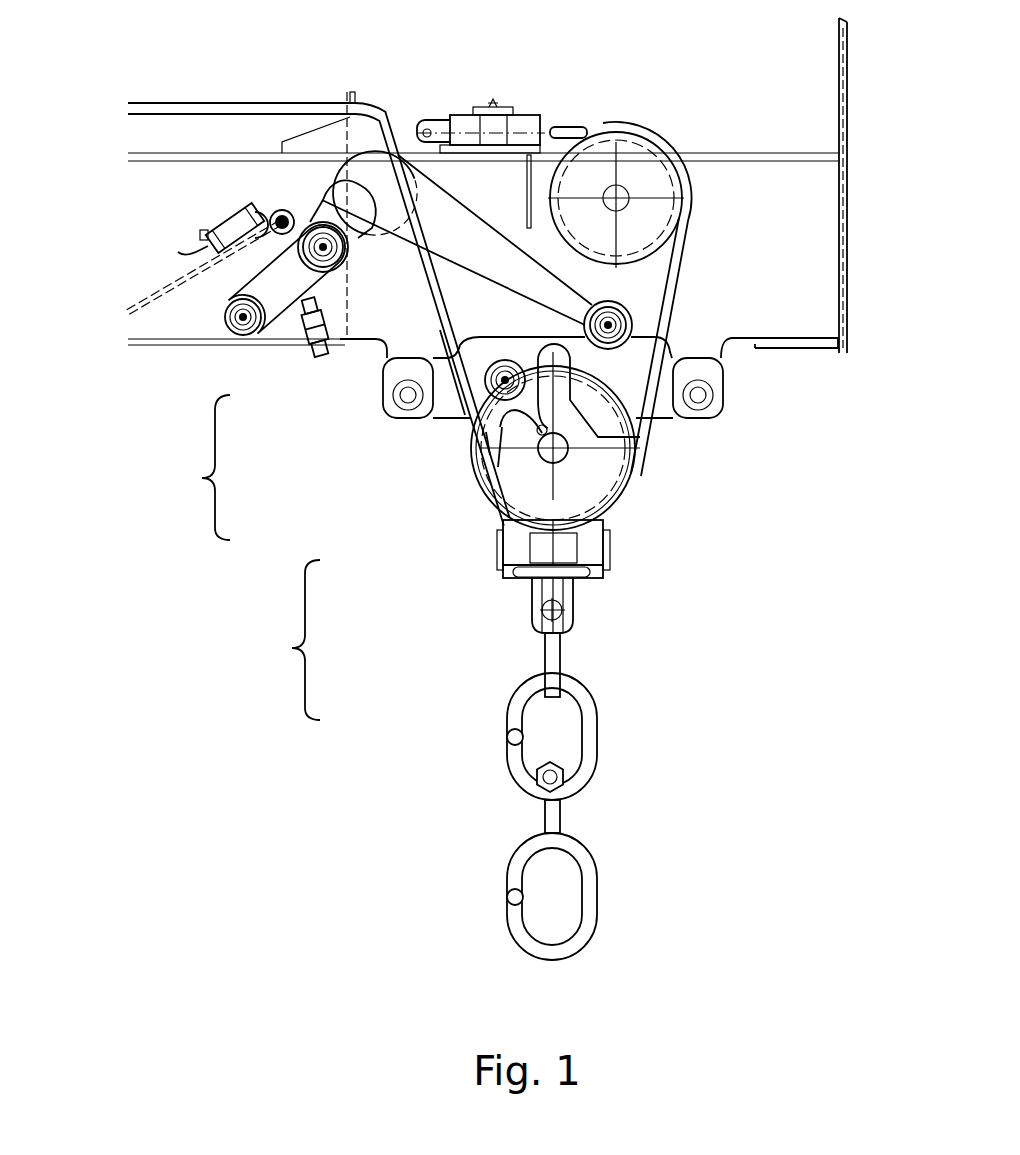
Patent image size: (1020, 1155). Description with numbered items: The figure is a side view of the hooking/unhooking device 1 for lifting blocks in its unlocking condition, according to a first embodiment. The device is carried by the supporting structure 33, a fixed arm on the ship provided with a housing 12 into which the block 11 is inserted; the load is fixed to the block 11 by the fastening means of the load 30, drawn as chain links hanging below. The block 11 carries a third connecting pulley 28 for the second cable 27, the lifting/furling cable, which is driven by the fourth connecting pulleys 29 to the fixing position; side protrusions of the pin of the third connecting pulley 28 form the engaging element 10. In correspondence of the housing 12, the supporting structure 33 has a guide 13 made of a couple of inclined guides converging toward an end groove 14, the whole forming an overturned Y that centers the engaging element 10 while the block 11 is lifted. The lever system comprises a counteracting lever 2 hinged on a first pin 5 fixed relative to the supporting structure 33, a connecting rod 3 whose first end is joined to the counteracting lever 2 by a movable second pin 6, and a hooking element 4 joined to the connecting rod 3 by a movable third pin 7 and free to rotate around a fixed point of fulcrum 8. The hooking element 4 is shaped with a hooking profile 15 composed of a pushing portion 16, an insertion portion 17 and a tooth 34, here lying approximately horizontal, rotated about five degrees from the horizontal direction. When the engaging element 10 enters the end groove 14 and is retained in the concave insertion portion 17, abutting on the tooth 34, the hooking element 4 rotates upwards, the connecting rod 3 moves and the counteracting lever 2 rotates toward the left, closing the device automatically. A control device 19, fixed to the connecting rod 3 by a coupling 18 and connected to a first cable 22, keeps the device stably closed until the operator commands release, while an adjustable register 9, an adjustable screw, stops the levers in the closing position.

The hooking/unhooking device 1 is at (196, 467).
The counteracting lever 2 is at (272, 322).
The connecting rod 3 is at (408, 242).
The hooking element 4 is at (455, 413).
The first pin 5 is at (243, 317).
The second pin 6 is at (323, 247).
The third pin 7 is at (612, 324).
The point of fulcrum 8 is at (505, 380).
The adjustable register 9 is at (318, 337).
The engaging element 10 is at (562, 455).
The block 11 is at (583, 572).
The housing 12 is at (782, 185).
The guide 13 is at (607, 440).
The end groove 14 is at (567, 358).
The hooking profile 15 is at (284, 640).
The pushing portion 16 is at (510, 418).
The insertion portion 17 is at (542, 430).
The coupling 18 is at (282, 222).
The control device 19 is at (230, 243).
The first cable 22 is at (152, 298).
The second cable 27 is at (202, 105).
The third connecting pulley 28 is at (600, 465).
The fourth connecting pulleys 29 is at (602, 172).
The fastening means of the load 30 is at (590, 723).
The supporting structure 33 is at (148, 337).
The tooth 34 is at (492, 440).